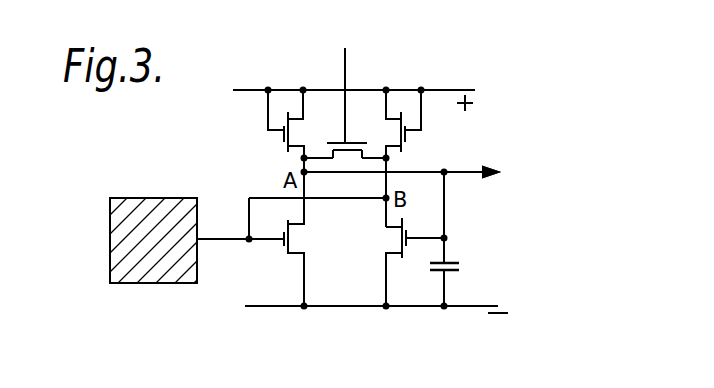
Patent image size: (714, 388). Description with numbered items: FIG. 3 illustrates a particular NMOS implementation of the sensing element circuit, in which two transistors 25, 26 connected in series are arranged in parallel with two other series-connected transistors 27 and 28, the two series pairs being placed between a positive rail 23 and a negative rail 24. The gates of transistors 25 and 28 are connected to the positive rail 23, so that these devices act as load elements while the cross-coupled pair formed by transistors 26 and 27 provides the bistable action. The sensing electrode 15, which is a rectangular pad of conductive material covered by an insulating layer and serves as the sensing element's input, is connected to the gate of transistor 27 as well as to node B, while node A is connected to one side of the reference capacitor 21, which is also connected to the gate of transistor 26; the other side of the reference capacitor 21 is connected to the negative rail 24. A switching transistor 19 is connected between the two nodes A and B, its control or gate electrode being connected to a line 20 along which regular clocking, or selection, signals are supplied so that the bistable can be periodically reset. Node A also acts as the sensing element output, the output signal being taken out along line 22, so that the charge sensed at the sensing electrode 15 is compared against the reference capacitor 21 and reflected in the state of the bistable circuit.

The sensing electrode 15 is at (188, 285).
The switching transistor 19 is at (358, 142).
The line 20 is at (348, 70).
The reference capacitor 21 is at (463, 263).
The line 22 is at (467, 167).
The positive rail 23 is at (455, 85).
The negative rail 24 is at (482, 308).
The transistor 25 is at (407, 140).
The transistor 26 is at (408, 233).
The transistor 27 is at (288, 255).
The transistor 28 is at (282, 137).